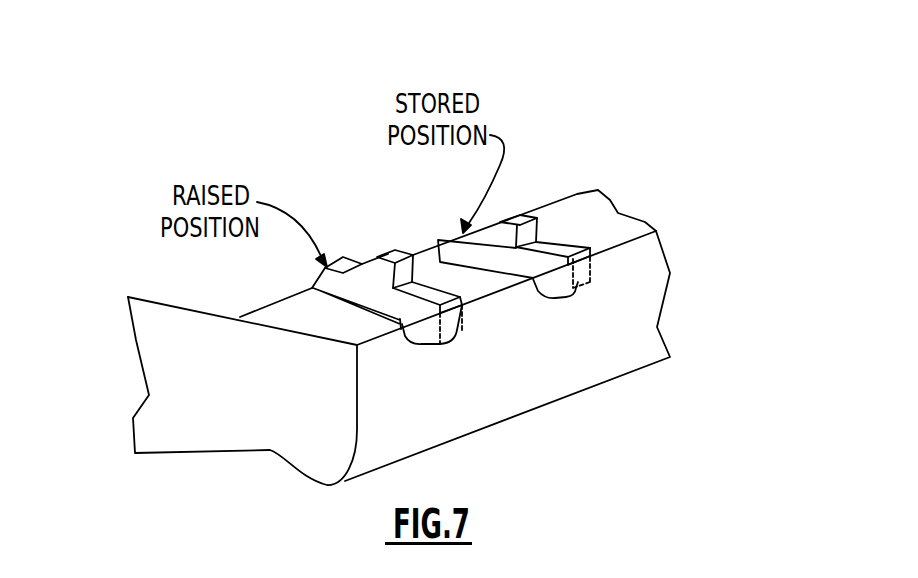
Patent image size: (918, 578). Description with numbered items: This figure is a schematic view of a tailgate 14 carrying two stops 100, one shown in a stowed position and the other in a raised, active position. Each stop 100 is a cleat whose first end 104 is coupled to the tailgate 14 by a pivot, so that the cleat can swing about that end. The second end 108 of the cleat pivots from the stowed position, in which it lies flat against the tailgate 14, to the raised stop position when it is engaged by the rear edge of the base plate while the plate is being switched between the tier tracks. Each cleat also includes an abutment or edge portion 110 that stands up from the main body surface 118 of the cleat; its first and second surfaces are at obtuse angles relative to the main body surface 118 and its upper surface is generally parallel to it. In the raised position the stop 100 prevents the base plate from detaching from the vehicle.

The tailgate 14 is at (147, 300).
The stop 100 is at (422, 230).
The first end 104 is at (452, 337).
The second end 108 is at (313, 272).
The abutment or edge portion 110 is at (390, 251).
The main body surface 118 is at (438, 300).